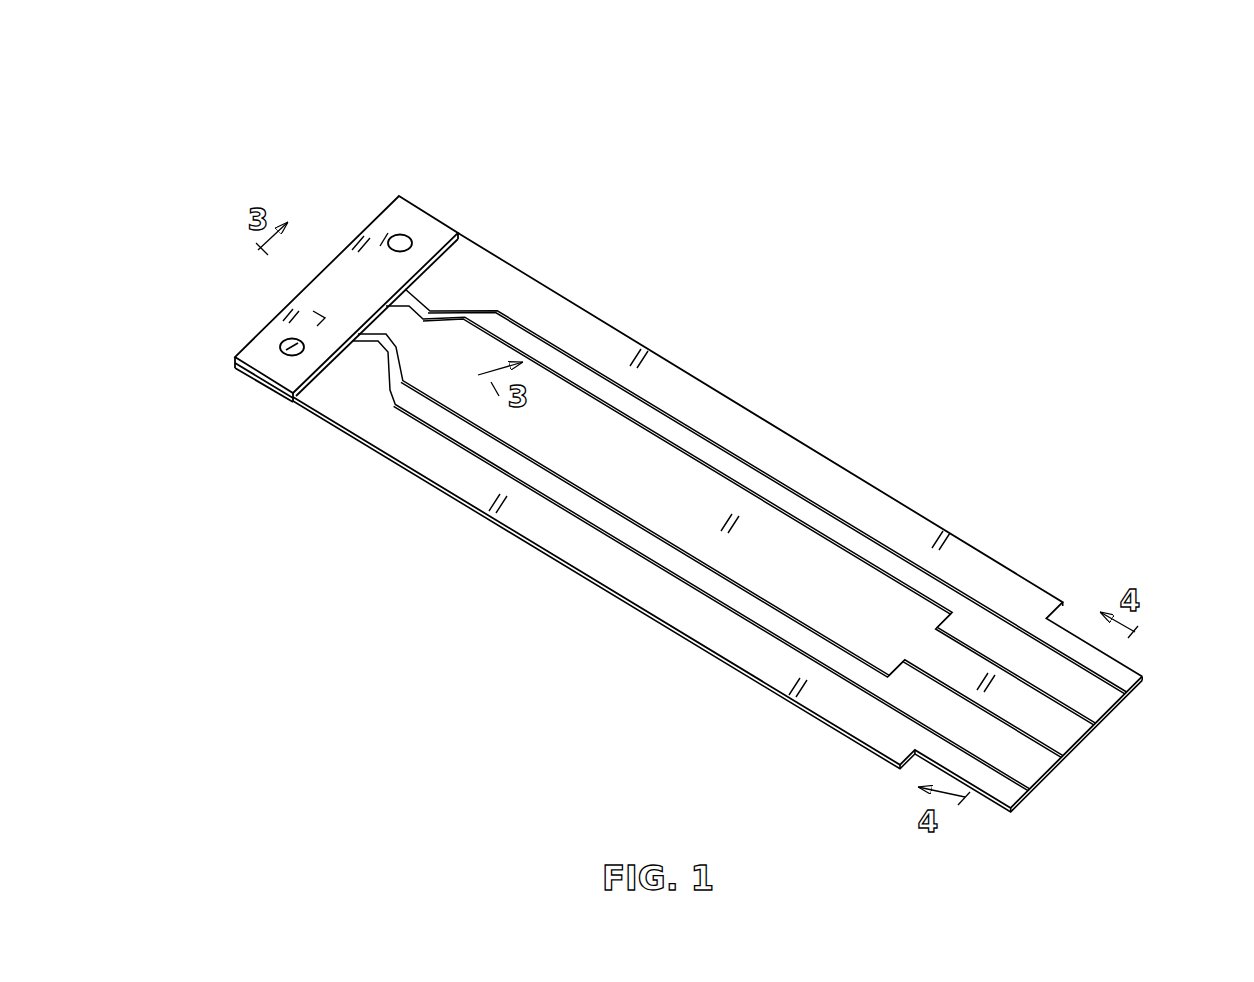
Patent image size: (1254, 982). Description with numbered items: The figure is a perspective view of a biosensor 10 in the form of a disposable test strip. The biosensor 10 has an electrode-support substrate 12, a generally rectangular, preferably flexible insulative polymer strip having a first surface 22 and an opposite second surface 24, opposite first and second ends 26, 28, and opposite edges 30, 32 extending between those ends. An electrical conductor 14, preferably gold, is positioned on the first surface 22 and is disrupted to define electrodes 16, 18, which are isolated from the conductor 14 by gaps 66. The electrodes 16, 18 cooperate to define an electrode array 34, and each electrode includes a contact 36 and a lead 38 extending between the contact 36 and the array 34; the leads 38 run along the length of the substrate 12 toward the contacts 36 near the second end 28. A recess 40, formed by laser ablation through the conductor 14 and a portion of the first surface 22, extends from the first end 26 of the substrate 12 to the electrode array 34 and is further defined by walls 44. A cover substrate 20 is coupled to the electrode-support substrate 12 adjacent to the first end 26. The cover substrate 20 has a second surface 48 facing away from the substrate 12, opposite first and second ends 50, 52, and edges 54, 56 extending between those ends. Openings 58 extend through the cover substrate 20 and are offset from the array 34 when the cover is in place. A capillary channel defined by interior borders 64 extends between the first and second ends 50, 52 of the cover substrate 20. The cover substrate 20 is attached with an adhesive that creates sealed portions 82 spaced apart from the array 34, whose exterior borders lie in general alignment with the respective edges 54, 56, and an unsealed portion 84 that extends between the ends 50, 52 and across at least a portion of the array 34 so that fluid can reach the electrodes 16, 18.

The biosensor 10 is at (866, 433).
The electrode-support substrate 12 is at (1084, 744).
The electrical conductor 14 is at (957, 668).
The electrode 16 is at (437, 412).
The electrode 18 is at (483, 310).
The cover substrate 20 is at (262, 338).
The first surface 22 is at (632, 545).
The second surface 24 is at (692, 640).
The first end 26 is at (236, 357).
The second end 28 is at (1022, 798).
The edge 30 is at (508, 532).
The edge 32 is at (707, 386).
The electrode array 34 is at (372, 336).
The contact 36 is at (1085, 700).
The lead 38 is at (848, 535).
The recess 40 is at (325, 225).
The walls 44 is at (276, 272).
The second surface 48 is at (430, 232).
The first end 50 is at (366, 218).
The second end 52 is at (437, 257).
The edge 54 is at (289, 358).
The edge 56 is at (443, 218).
The openings 58 is at (402, 236).
The interior borders 64 is at (387, 205).
The gaps 66 is at (716, 466).
The sealed portions 82 is at (362, 225).
The unsealed portion 84 is at (318, 276).